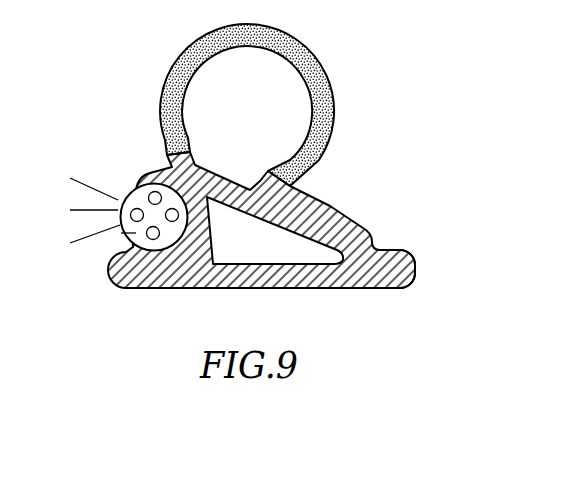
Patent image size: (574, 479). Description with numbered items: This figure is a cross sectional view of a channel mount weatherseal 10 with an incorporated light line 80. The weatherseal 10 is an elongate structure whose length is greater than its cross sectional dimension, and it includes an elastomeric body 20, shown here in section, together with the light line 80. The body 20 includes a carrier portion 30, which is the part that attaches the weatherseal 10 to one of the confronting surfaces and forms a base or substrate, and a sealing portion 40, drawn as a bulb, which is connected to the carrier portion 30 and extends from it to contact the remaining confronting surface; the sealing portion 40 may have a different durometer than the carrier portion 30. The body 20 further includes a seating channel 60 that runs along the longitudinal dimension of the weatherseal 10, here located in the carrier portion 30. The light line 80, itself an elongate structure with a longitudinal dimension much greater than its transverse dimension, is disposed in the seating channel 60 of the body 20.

The weatherseal 10 is at (267, 173).
The body 20 is at (372, 225).
The carrier portion 30 is at (405, 278).
The sealing portion 40 is at (330, 88).
The seating channel 60 is at (130, 193).
The light line 80 is at (121, 233).